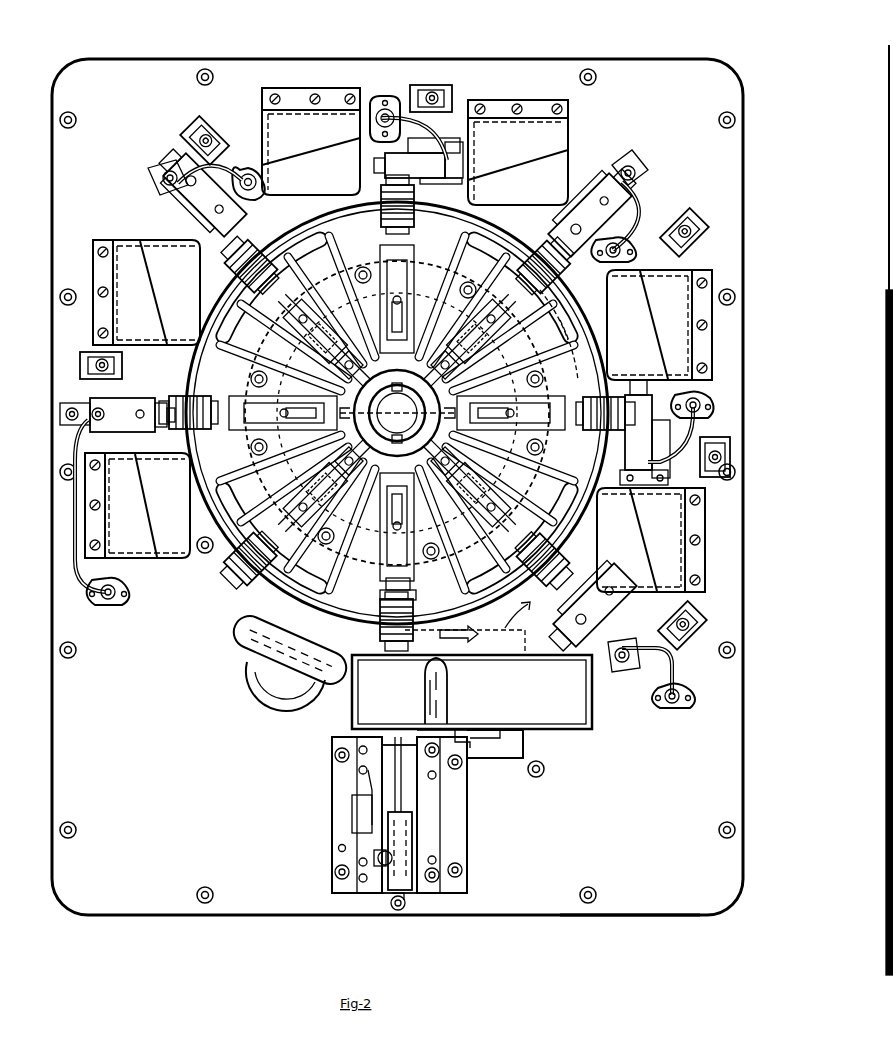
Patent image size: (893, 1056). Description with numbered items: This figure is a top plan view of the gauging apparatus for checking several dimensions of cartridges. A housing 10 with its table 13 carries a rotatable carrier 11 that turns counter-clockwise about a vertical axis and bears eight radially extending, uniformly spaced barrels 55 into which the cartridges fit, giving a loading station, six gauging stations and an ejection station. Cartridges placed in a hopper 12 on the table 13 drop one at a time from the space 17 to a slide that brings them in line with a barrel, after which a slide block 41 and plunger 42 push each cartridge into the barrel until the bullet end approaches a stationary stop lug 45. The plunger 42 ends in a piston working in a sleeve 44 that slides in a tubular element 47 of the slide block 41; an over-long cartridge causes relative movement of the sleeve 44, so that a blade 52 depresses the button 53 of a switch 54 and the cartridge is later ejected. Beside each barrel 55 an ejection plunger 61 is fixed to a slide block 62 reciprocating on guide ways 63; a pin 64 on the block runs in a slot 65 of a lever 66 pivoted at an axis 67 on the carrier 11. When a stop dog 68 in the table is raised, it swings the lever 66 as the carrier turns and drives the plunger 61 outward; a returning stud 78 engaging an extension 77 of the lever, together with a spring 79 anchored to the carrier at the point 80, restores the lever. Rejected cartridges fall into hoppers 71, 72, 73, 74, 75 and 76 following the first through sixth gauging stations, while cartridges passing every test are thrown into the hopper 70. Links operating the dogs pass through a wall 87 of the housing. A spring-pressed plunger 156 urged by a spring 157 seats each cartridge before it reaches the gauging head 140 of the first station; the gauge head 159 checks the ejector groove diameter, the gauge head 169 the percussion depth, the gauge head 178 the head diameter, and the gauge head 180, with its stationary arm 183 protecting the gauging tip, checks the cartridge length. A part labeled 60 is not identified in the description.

The housing 10 is at (181, 312).
The rotatable carrier 11 is at (298, 222).
The hopper 12 is at (597, 690).
The table 13 is at (624, 912).
The space 17 is at (428, 689).
The plunger operating slide block 41 is at (420, 803).
The plunger 42 is at (405, 770).
The sleeve 44 is at (404, 897).
The stop lug 45 is at (390, 585).
The tubular element 47 is at (412, 832).
The blade 52 is at (380, 853).
The button 53 is at (365, 800).
The switch 54 is at (360, 820).
The barrels 55 is at (522, 252).
The drive ring 60 is at (585, 368).
The ejection plunger 61 is at (283, 300).
The slide block 62 is at (210, 380).
The guide ways 63 is at (385, 548).
The pin 64 is at (390, 545).
The slot 65 is at (232, 450).
The lever 66 is at (503, 275).
The axis 67 is at (262, 515).
The stop dog 68 is at (582, 530).
The hopper 70 is at (255, 655).
The receiving compartment or hopper 71 is at (665, 550).
The hopper 72 is at (676, 360).
The hopper 73 is at (495, 140).
The hopper 74 is at (296, 140).
The hopper 75 is at (165, 252).
The hopper 76 is at (167, 530).
The extension 77 is at (562, 300).
The returning stud 78 is at (585, 338).
The spring 79 is at (367, 245).
The point 80 is at (465, 218).
The wall 87 is at (120, 413).
The gauging head 140 is at (596, 603).
The spring-pressed plunger 156 is at (505, 628).
The spring 157 is at (555, 640).
The gauge head 159 is at (640, 435).
The gauge head 169 is at (580, 220).
The gauge head 178 is at (400, 165).
The gauge head 180 is at (195, 222).
The stationary arm 183 is at (252, 168).